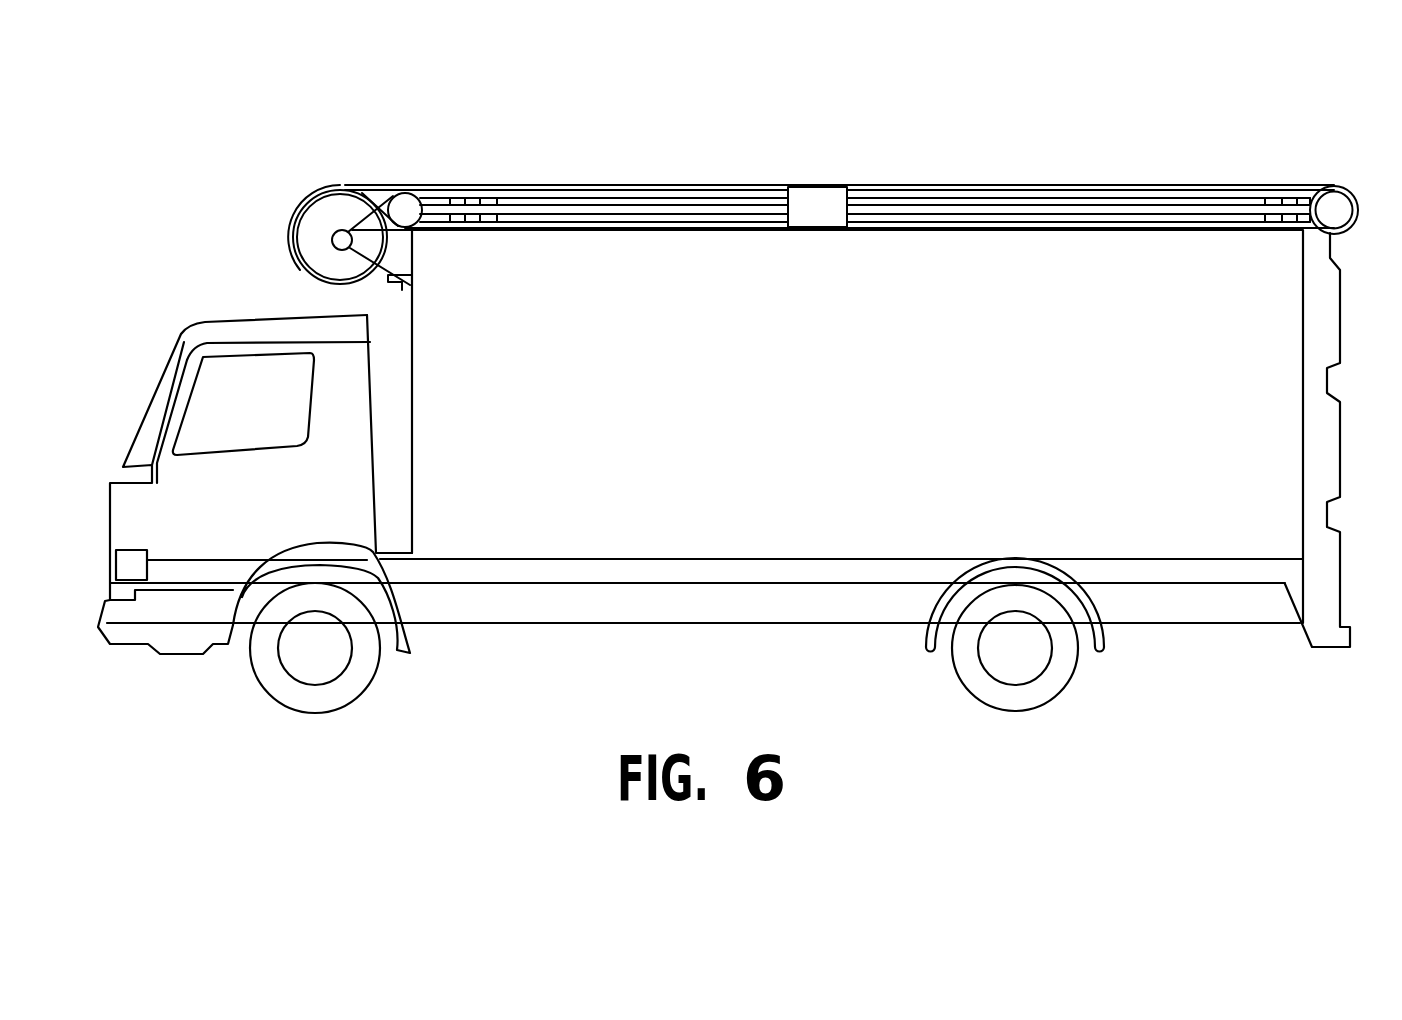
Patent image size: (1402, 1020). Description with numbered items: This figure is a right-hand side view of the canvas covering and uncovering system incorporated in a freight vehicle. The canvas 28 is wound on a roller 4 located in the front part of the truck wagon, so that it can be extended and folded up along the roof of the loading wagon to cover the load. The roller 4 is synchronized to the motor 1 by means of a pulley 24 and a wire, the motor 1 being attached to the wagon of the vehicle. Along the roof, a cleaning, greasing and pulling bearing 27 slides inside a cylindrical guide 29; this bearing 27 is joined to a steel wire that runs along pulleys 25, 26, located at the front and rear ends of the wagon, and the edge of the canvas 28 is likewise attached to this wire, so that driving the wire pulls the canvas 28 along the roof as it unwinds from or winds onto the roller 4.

The motor 1 is at (400, 288).
The roller 4 is at (316, 190).
The pulley 24 is at (322, 248).
The pulley 25 is at (402, 190).
The pulley 26 is at (1324, 186).
The cleaning, greasing and pulling bearing 27 is at (833, 186).
The canvas 28 is at (792, 186).
The cylindrical guide 29 is at (540, 185).